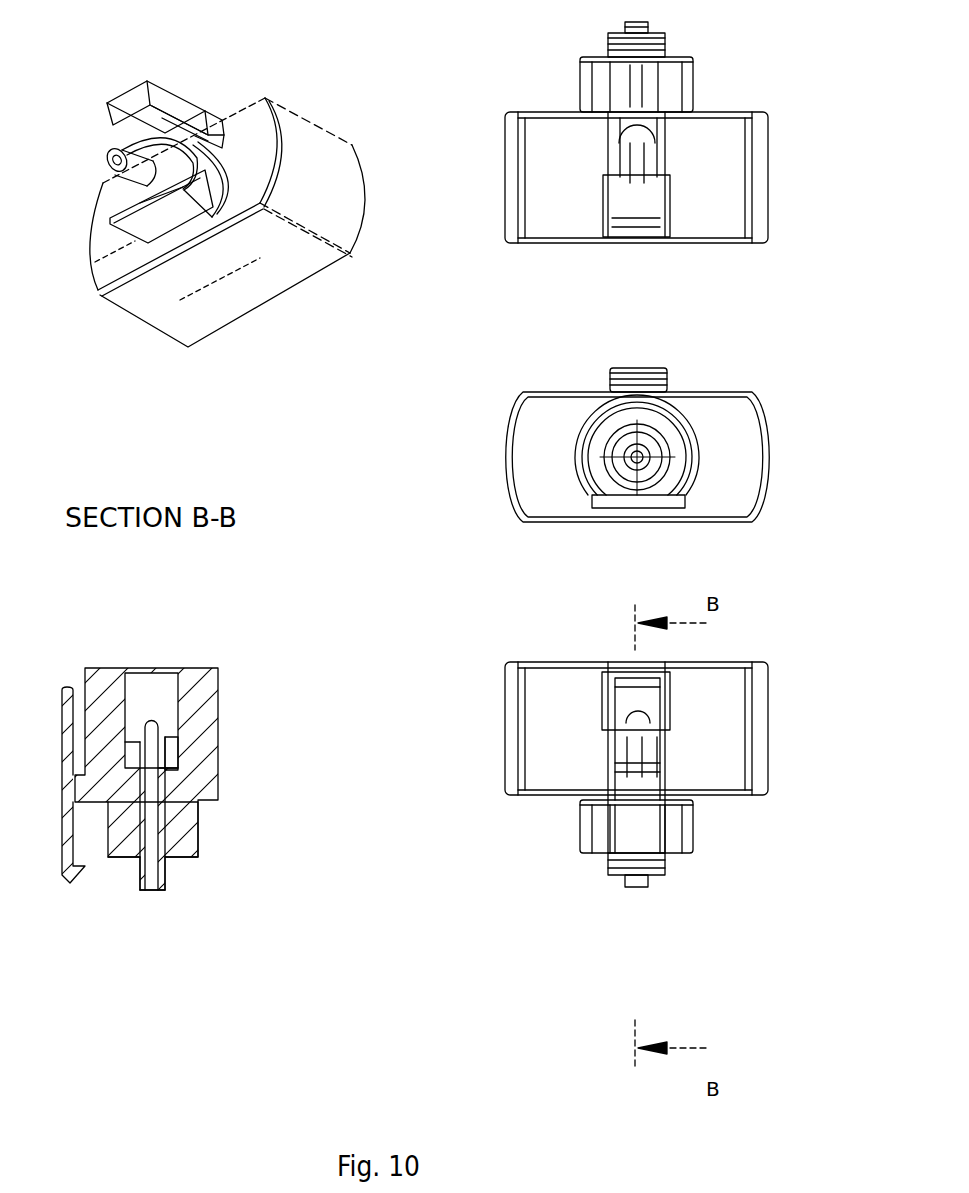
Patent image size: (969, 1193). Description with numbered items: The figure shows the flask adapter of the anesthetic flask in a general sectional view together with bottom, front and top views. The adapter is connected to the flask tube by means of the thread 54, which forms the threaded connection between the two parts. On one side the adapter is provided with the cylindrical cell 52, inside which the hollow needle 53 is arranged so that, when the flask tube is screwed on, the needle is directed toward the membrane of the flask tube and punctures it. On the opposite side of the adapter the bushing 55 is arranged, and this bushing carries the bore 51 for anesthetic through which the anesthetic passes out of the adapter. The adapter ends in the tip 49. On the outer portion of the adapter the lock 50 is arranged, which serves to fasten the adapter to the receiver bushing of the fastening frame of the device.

The tip 49 is at (162, 878).
The lock 50 is at (160, 117).
The bore for anesthetic 51 is at (162, 817).
The cylindrical cell 52 is at (172, 745).
The hollow needle 53 is at (163, 740).
The thread 54 is at (215, 665).
The bushing with a bore for anesthetic 55 is at (102, 173).